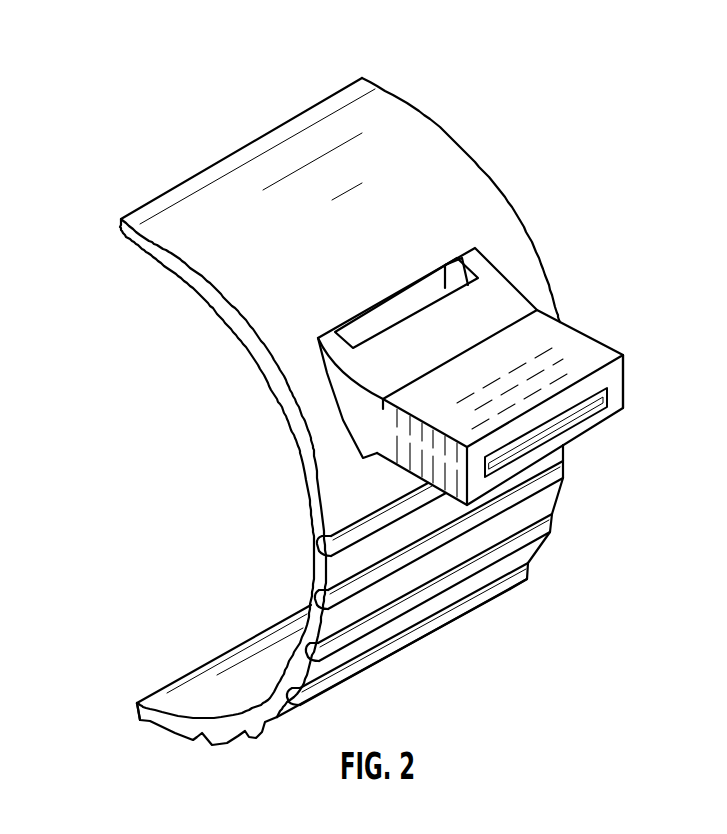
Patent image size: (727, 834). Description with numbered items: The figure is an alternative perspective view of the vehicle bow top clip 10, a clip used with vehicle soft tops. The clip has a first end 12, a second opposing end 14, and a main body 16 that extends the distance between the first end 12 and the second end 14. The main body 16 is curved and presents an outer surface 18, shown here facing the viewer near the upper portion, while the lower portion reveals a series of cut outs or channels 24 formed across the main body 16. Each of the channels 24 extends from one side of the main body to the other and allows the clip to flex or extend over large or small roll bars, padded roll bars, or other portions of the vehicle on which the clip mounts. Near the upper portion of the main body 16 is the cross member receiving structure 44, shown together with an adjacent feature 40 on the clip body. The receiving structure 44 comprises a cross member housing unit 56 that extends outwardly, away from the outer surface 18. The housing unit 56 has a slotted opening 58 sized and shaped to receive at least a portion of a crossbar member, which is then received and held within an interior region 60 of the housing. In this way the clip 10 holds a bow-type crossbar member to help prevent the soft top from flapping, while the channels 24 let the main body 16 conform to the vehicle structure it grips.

The vehicle bow top clip 10 is at (100, 379).
The first end 12 is at (118, 227).
The second opposing end 14 is at (136, 708).
The main body 16 is at (458, 170).
The outer surface 18 is at (314, 152).
The channels 24 is at (322, 544).
The mounting plate with slot 40 is at (455, 263).
The cross member receiving structure 44 is at (580, 342).
The cross member housing unit 56 is at (624, 379).
The slotted opening 58 is at (577, 417).
The interior region 60 is at (537, 438).